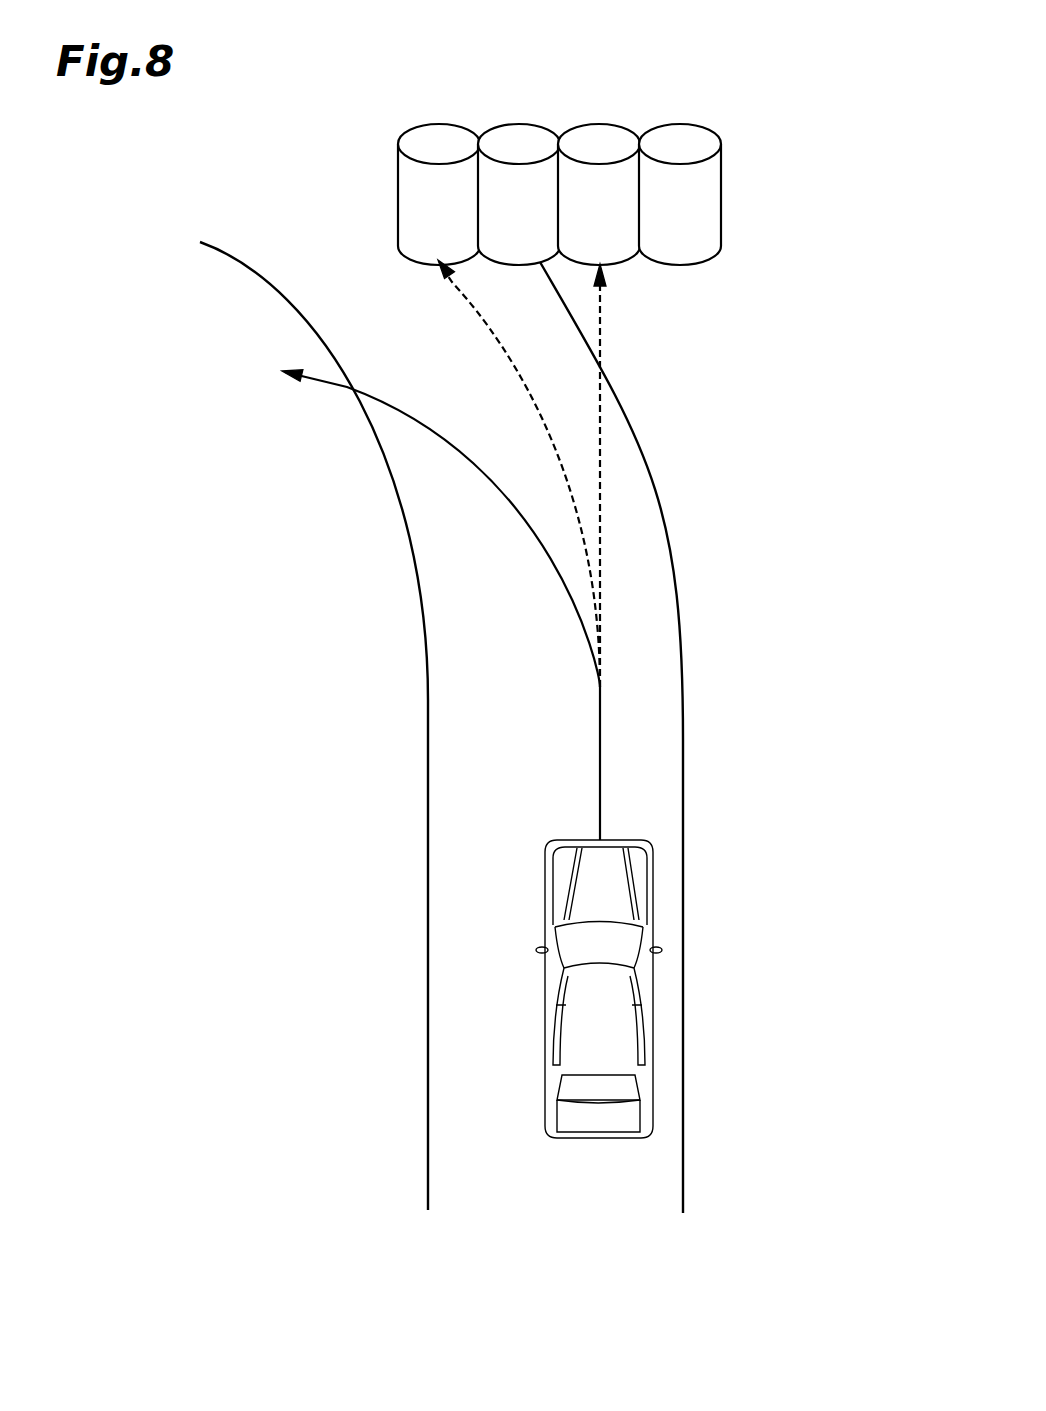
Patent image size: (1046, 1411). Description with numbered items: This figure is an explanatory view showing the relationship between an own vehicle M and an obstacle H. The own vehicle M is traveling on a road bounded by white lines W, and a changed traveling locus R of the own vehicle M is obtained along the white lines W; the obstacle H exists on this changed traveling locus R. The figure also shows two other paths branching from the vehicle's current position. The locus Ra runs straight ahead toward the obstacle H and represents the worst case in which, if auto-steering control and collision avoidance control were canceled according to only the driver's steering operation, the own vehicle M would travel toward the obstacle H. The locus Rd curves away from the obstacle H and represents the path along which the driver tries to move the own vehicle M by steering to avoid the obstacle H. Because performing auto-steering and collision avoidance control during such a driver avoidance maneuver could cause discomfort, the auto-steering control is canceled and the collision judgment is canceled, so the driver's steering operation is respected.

The obstacle H is at (678, 124).
The white lines W is at (683, 740).
The locus Rd is at (337, 388).
The locus Ra is at (601, 310).
The changed traveling locus R is at (537, 403).
The own vehicle M is at (627, 1140).